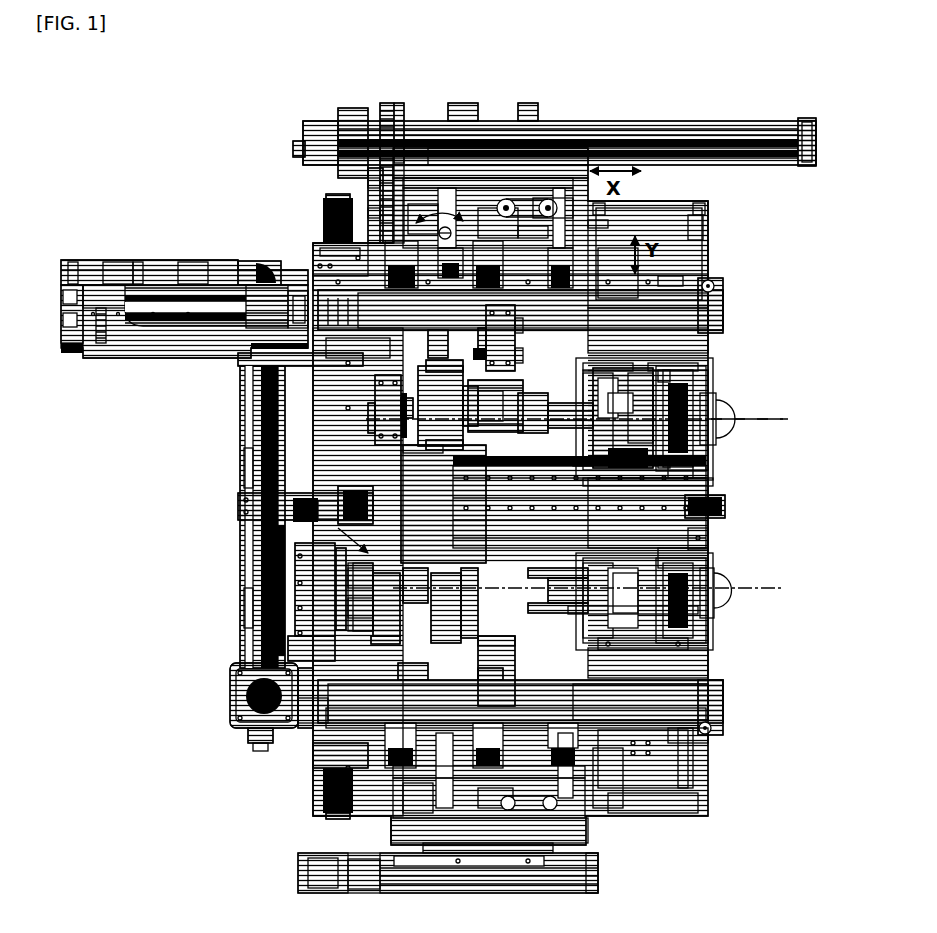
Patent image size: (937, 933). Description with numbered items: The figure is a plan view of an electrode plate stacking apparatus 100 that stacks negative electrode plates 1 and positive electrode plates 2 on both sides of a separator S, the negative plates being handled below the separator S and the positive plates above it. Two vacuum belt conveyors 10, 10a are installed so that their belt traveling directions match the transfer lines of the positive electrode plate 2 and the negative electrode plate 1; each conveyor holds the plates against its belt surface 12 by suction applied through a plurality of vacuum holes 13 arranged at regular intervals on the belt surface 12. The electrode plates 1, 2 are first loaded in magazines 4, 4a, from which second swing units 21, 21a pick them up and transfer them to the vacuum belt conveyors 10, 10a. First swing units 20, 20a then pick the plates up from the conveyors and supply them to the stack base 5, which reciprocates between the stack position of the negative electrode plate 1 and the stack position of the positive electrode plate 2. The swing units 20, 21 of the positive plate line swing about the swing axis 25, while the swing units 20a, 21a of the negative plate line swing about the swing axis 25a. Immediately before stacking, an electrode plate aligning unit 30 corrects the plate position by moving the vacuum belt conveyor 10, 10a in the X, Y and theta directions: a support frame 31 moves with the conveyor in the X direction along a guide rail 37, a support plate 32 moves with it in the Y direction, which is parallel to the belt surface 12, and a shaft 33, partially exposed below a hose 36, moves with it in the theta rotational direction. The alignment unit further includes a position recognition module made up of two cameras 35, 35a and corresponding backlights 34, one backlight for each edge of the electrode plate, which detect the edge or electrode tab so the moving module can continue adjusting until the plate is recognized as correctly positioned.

The negative electrode plate 1 is at (636, 688).
The positive electrode plate 2 is at (638, 312).
The magazine 4 is at (693, 462).
The magazine 4a is at (698, 533).
The stack base 5 is at (231, 506).
The vacuum belt conveyor 10 is at (716, 297).
The vacuum belt conveyor 10a is at (711, 700).
The belt surface 12 is at (540, 347).
The vacuum holes 13 is at (530, 384).
The first swing unit 20 is at (555, 360).
The first swing unit 20a is at (520, 617).
The second swing unit 21 is at (705, 383).
The second swing unit 21a is at (705, 608).
The swing axis 25 is at (757, 418).
The swing axis 25a is at (755, 572).
The electrode plate aligning unit 30 is at (410, 215).
The support frame 31 is at (553, 162).
The support plate 32 is at (585, 218).
The shaft 33 is at (370, 198).
The backlight 34 is at (388, 270).
The camera 35 is at (358, 418).
The camera 35a is at (462, 345).
The hose 36 is at (437, 205).
The guide rail 37 is at (735, 125).
The separator S is at (415, 470).
The electrode plate stacking apparatus 100 is at (768, 866).